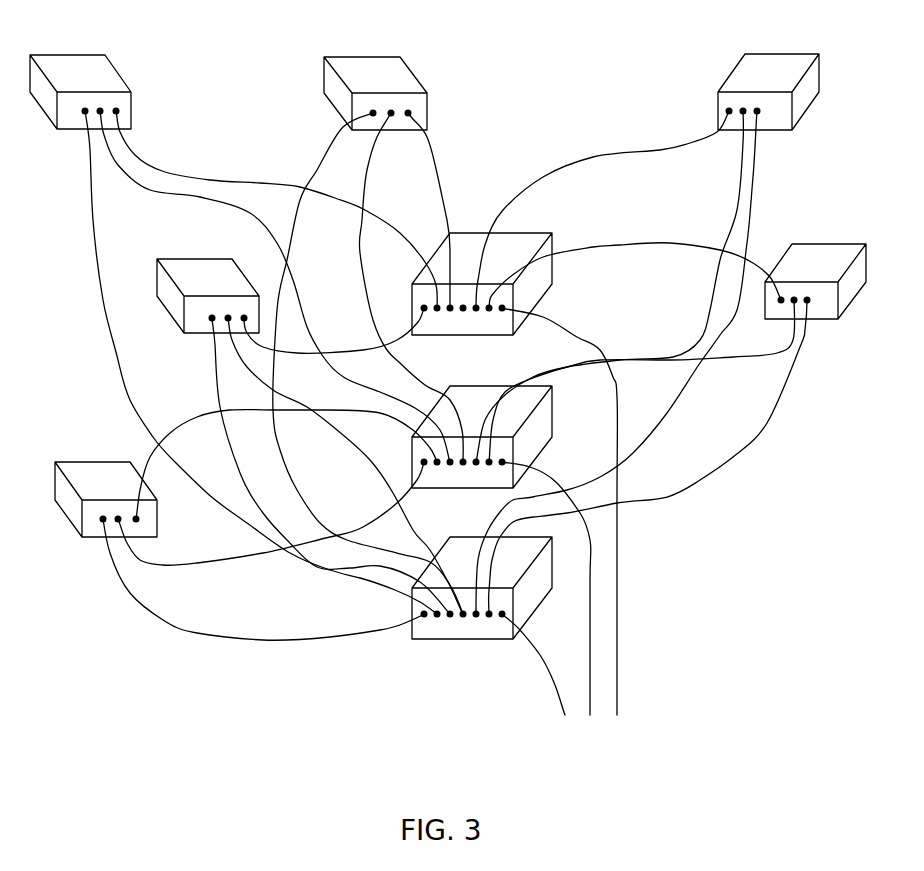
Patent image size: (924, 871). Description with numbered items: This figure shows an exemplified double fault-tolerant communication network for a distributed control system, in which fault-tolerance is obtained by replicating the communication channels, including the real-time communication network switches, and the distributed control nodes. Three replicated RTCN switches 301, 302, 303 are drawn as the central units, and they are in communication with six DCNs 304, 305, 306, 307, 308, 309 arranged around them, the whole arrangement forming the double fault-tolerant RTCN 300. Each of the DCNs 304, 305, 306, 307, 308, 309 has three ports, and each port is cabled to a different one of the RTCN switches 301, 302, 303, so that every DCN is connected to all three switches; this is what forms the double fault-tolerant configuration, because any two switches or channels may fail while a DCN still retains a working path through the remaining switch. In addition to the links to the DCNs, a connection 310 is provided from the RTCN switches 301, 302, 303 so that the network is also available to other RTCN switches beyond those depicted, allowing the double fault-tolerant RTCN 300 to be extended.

The double fault-tolerant RTCN 300 is at (446, 375).
The RTCN switch 301 is at (482, 605).
The RTCN switch 302 is at (454, 437).
The RTCN switch 303 is at (493, 268).
The DCN 304 is at (106, 483).
The DCN 305 is at (208, 281).
The DCN 306 is at (80, 77).
The DCN 307 is at (375, 78).
The DCN 308 is at (768, 76).
The DCN 309 is at (815, 267).
The connection to other RTCN switches 310 is at (559, 533).